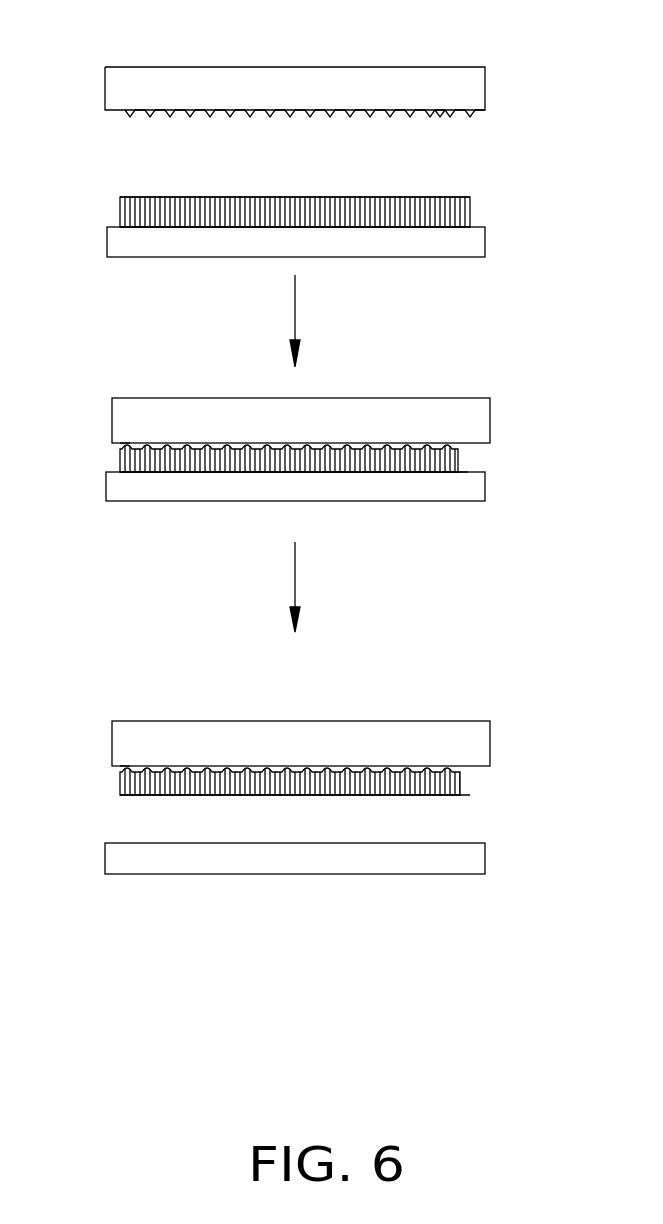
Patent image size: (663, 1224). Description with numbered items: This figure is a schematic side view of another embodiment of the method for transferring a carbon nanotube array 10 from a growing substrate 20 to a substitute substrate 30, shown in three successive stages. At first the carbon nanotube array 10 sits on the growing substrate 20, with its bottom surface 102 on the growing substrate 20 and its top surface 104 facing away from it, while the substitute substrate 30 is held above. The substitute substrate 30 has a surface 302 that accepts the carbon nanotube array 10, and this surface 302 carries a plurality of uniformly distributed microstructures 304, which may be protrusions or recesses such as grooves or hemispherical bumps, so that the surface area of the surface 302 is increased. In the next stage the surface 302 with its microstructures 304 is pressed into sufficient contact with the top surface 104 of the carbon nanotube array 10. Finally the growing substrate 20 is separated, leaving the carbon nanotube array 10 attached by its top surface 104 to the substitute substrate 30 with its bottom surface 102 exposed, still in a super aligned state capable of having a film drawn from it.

The substitute substrate 30 is at (472, 90).
The surface 302 is at (415, 110).
The microstructures 304 is at (443, 113).
The carbon nanotube array 10 is at (452, 200).
The top surface 104 is at (148, 198).
The bottom surface 102 is at (165, 227).
The growing substrate 20 is at (472, 245).